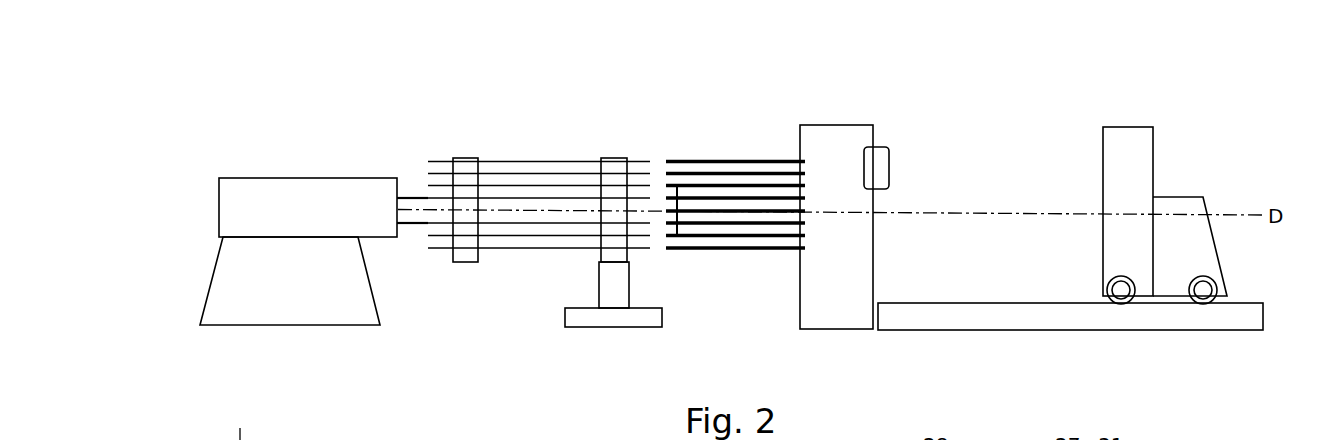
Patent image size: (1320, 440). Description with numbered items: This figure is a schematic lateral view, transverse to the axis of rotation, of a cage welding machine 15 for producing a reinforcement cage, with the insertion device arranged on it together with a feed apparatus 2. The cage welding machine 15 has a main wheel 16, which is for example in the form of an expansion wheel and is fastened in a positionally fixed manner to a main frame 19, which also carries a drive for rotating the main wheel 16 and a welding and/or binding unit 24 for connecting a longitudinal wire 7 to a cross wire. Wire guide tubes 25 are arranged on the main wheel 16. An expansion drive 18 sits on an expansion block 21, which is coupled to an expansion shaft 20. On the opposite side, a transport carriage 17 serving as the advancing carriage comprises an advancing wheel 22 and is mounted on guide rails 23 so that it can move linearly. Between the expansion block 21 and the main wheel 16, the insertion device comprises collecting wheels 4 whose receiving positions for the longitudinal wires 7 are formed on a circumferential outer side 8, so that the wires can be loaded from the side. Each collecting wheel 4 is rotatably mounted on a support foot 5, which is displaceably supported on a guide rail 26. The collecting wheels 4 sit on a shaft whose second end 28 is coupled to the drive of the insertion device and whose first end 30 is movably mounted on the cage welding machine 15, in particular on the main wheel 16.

The feed apparatus 2 is at (565, 346).
The collecting wheel 4 is at (463, 264).
The support foot 5 is at (630, 283).
The longitudinal wires 7 is at (540, 160).
The circumferential outer side 8 is at (612, 144).
The cage welding machine 15 is at (887, 371).
The main wheel 16 is at (856, 110).
The transport carriage 17 is at (1145, 113).
The expansion drive 18 is at (284, 178).
The main frame 19 is at (835, 318).
The expansion shaft 20 is at (411, 186).
The expansion block 21 is at (208, 272).
The advancing wheel 22 is at (1155, 158).
The guide rails 23 is at (988, 333).
The welding and/or binding unit 24 is at (893, 165).
The wire guide tubes 25 is at (748, 160).
The guide rail 26 is at (613, 328).
The second end 28 is at (386, 164).
The first end 30 is at (655, 142).